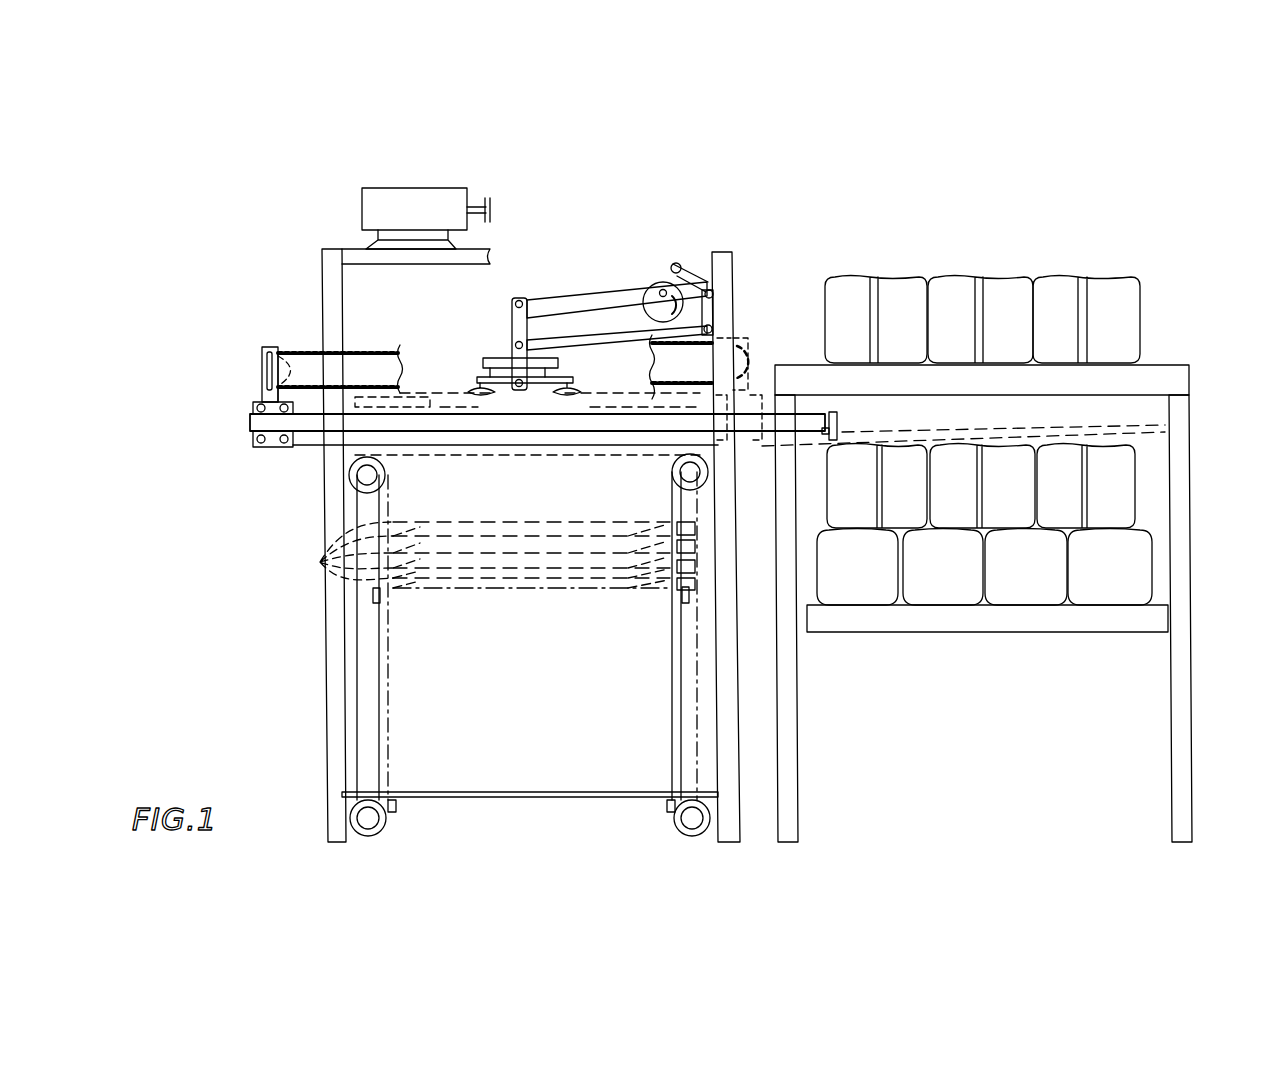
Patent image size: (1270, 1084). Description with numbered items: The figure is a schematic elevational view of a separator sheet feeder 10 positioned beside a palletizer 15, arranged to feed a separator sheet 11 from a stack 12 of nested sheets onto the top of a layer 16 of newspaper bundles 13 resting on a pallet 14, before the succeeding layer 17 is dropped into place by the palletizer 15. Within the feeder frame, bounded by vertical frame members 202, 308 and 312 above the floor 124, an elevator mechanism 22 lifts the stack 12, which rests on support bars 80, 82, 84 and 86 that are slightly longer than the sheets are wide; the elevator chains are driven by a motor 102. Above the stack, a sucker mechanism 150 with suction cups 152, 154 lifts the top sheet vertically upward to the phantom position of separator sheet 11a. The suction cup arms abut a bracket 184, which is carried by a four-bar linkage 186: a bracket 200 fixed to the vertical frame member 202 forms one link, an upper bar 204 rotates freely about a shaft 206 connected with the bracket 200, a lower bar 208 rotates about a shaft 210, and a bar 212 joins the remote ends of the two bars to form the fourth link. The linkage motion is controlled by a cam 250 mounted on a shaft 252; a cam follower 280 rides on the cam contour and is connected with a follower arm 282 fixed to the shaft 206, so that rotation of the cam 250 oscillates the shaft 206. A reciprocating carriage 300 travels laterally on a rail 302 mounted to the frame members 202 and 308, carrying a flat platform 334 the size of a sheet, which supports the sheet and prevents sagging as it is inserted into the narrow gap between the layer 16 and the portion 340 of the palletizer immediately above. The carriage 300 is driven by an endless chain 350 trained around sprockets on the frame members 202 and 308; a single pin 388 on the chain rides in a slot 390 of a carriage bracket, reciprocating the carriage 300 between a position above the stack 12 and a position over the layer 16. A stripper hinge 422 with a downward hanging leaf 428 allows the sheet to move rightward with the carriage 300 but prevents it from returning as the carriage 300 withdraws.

The separator sheet feeder 10 is at (604, 188).
The separator sheet 11 is at (322, 562).
The separator sheet in elevated position 11a is at (446, 400).
The stack of separator sheets 12 is at (546, 589).
The newspaper bundles 13 is at (984, 545).
The pallet 14 is at (995, 625).
The palletizer 15 is at (1192, 370).
The layer of newspaper bundles 16 is at (1145, 468).
The succeeding layer of newspaper bundles 17 is at (1142, 291).
The elevator mechanism 22 is at (390, 698).
The support bar 80 is at (396, 806).
The support bar 82 is at (373, 598).
The support bar 84 is at (675, 806).
The support bar 86 is at (690, 597).
The motor 102 is at (362, 207).
The floor 124 is at (510, 786).
The sucker mechanism 150 is at (510, 388).
The suction cup 152 is at (570, 394).
The suction cup 154 is at (480, 394).
The bracket 184 is at (483, 362).
The four-bar linkage 186 is at (548, 296).
The bracket 200 is at (708, 315).
The vertical frame member 202 is at (735, 272).
The upper bar 204 is at (580, 296).
The shaft 206 is at (715, 292).
The lower bar 208 is at (596, 339).
The shaft 210 is at (712, 330).
The bar 212 is at (512, 318).
The cam 250 is at (650, 284).
The shaft 252 is at (646, 300).
The cam follower 280 is at (688, 265).
The follower arm 282 is at (722, 262).
The reciprocating carriage 300 is at (305, 452).
The rail 302 is at (250, 423).
The vertical frame member 308 is at (333, 472).
The vertical frame member 312 is at (1142, 513).
The platform 334 is at (458, 447).
The portion of the palletizer 340 is at (1005, 400).
The endless chain 350 is at (382, 352).
The pin 388 is at (263, 378).
The slot 390 is at (262, 355).
The hinge 422 is at (841, 413).
The leaf 428 is at (840, 432).